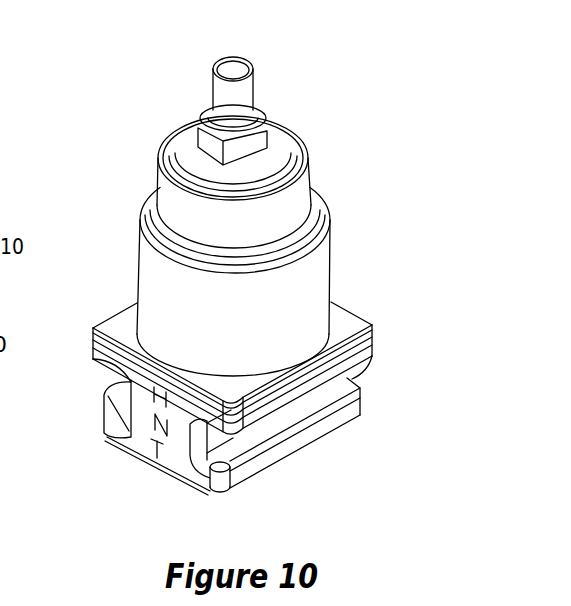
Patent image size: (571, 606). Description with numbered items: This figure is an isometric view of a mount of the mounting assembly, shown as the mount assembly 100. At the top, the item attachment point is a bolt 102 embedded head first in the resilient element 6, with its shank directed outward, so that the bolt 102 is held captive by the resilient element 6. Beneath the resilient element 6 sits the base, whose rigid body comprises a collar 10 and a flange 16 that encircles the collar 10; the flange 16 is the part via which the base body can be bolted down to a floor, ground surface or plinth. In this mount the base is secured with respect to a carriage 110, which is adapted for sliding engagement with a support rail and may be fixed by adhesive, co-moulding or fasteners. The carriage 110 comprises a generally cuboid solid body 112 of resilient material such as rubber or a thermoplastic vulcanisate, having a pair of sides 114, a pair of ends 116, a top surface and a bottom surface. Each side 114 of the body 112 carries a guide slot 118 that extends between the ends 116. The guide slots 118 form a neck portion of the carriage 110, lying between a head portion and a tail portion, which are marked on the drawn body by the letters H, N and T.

The mount assembly 100 is at (348, 104).
The bolt 102 is at (227, 62).
The resilient element 6 is at (176, 172).
The collar 10 is at (313, 278).
The flange 16 is at (357, 325).
The carriage 110 is at (385, 336).
The solid body 112 is at (377, 348).
The sides 114 is at (313, 427).
The ends 116 is at (140, 418).
The guide slot 118 is at (362, 377).